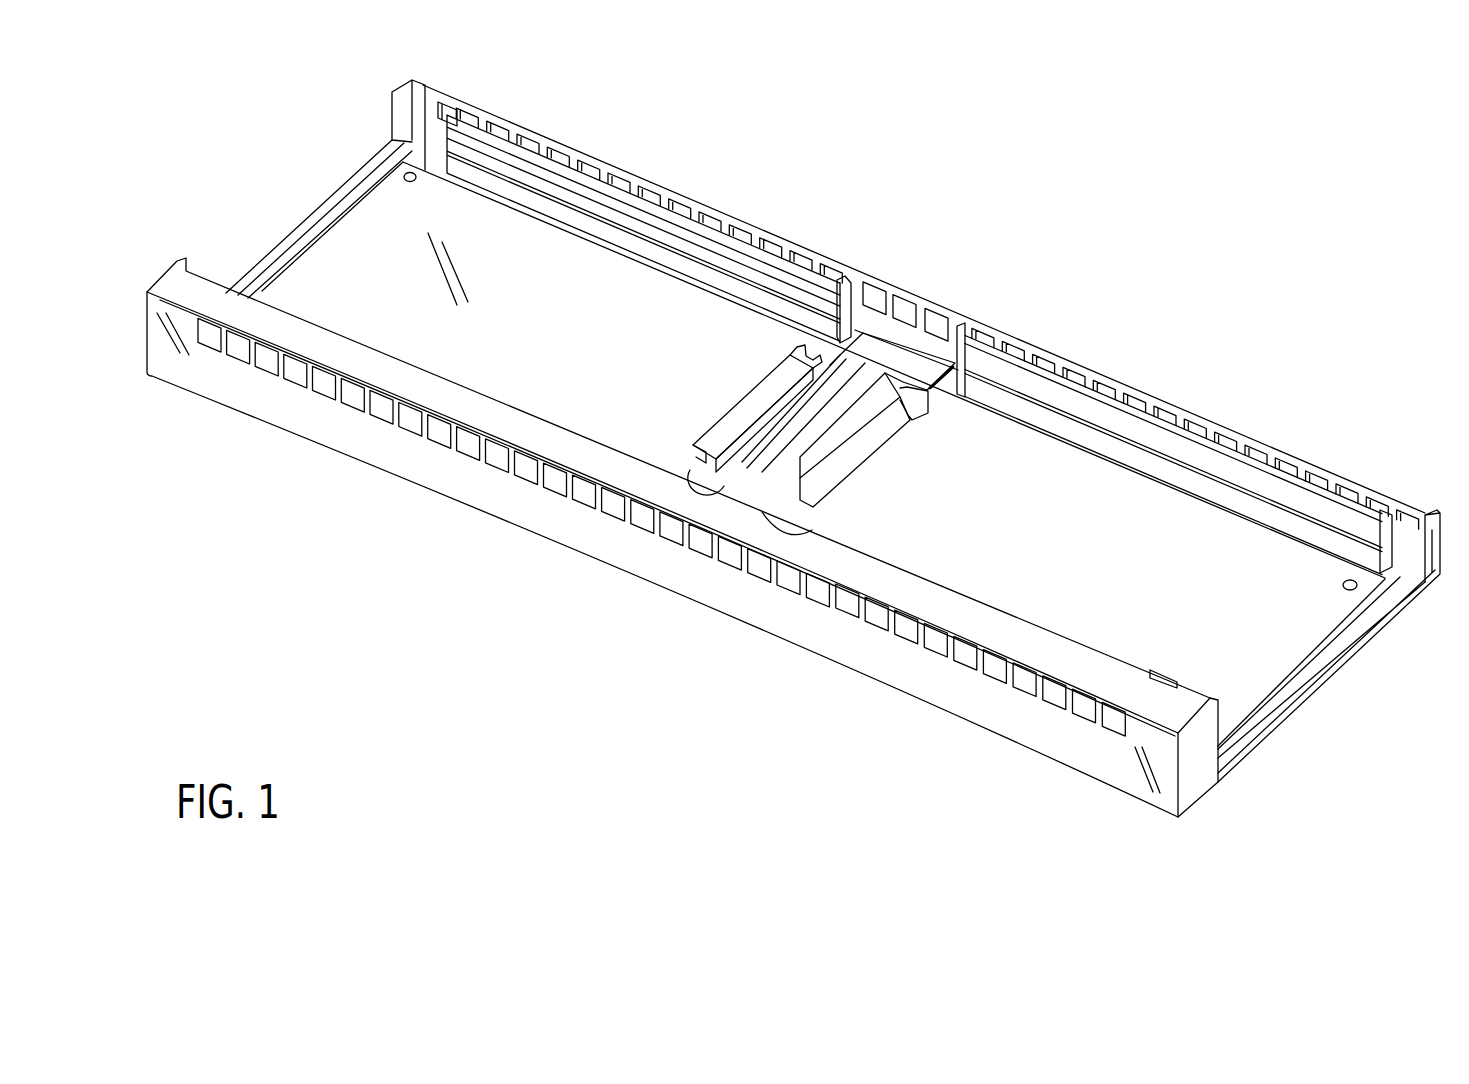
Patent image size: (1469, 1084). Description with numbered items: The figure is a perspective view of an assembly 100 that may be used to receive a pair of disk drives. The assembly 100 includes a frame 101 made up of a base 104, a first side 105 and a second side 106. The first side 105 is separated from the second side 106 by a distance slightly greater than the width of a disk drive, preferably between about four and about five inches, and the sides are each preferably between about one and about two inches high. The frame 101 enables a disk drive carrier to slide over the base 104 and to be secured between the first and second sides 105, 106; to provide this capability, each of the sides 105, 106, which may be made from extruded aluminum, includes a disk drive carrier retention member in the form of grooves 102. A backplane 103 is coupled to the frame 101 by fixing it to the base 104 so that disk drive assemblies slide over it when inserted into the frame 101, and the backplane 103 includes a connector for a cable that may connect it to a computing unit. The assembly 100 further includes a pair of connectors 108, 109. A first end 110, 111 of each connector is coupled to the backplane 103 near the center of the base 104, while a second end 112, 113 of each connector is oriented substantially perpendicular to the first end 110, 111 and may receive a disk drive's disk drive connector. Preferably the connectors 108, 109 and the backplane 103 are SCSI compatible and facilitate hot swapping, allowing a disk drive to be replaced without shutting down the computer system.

The assembly 100 is at (975, 260).
The frame 101 is at (347, 170).
The grooves 102 is at (1288, 498).
The backplane 103 is at (823, 454).
The base 104 is at (1353, 697).
The first side 105 is at (423, 457).
The second side 106 is at (1402, 508).
The connector 108 is at (757, 413).
The connector 109 is at (820, 447).
The first end 110 is at (705, 488).
The first end 111 is at (762, 512).
The second end 112 is at (757, 378).
The second end 113 is at (900, 438).